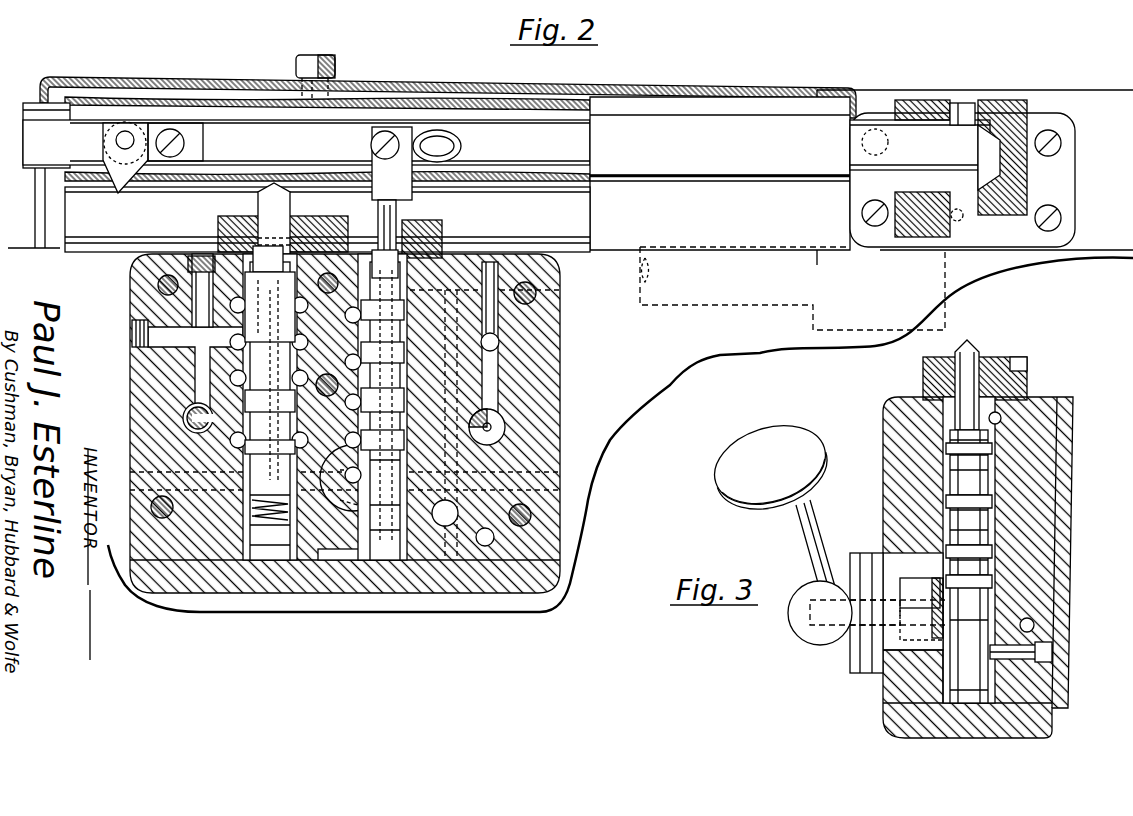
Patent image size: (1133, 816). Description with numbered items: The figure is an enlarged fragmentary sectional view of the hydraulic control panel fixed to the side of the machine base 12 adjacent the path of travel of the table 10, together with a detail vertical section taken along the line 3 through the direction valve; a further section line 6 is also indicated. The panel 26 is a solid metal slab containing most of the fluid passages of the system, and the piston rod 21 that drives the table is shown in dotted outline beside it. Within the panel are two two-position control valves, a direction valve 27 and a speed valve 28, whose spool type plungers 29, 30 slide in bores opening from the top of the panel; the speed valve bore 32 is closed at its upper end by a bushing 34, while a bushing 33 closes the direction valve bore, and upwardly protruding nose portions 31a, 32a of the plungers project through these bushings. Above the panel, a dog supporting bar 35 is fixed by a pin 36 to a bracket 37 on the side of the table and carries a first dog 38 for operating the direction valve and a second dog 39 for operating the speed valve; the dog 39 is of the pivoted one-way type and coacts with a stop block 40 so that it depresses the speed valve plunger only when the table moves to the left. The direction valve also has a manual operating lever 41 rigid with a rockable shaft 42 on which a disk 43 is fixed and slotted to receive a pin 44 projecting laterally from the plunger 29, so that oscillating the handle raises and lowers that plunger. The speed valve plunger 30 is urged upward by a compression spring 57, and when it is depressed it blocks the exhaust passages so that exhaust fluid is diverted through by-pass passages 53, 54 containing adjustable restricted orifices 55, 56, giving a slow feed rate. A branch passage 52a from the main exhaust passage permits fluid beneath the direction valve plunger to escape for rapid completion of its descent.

In FIG. 2, the table 10 is at (922, 96).
In FIG. 2, the base 12 is at (672, 377).
In FIG. 2, the piston rod 21 is at (668, 306).
In FIG. 2, the panel 26 is at (548, 336).
In FIG. 3, the panel 26 is at (895, 420).
In FIG. 2, the direction valve 27 is at (448, 246).
In FIG. 3, the direction valve 27 is at (1040, 353).
In FIG. 2, the speed valve 28 is at (218, 233).
In FIG. 2, the plunger 29 is at (358, 303).
In FIG. 3, the plunger 29 is at (996, 440).
In FIG. 2, the plunger 30 is at (246, 294).
In FIG. 2, the nose portion 31a is at (398, 205).
In FIG. 3, the nose portion 31a is at (982, 346).
In FIG. 2, the bore 32 is at (246, 312).
In FIG. 2, the nose portion 32a is at (325, 143).
In FIG. 2, the bushing 33 is at (440, 226).
In FIG. 3, the bushing 33 is at (930, 385).
In FIG. 2, the bushing 34 is at (232, 218).
In FIG. 2, the dog supporting bar 35 is at (712, 176).
In FIG. 2, the pin 36 is at (962, 103).
In FIG. 2, the bracket 37 is at (1015, 103).
In FIG. 2, the first dog 38 is at (416, 163).
In FIG. 2, the second dog 39 is at (118, 178).
In FIG. 2, the stop block 40 is at (196, 143).
In FIG. 3, the manual operating lever 41 is at (762, 506).
In FIG. 3, the rockable shaft 42 is at (812, 626).
In FIG. 3, the disk 43 is at (928, 588).
In FIG. 2, the pin 44 is at (358, 500).
In FIG. 3, the pin 44 is at (936, 660).
In FIG. 3, the branch passage 52a is at (1052, 650).
In FIG. 2, the by-pass passage 53 is at (196, 386).
In FIG. 2, the by-pass passage 54 is at (499, 382).
In FIG. 2, the adjustable restricted orifice 55 is at (186, 428).
In FIG. 2, the adjustable restricted orifice 56 is at (505, 436).
In FIG. 2, the compression spring 57 is at (252, 510).
In FIG. 2, the section line 3- 3 is at (388, 180).
In FIG. 2, the section line 6- 6 is at (312, 10).